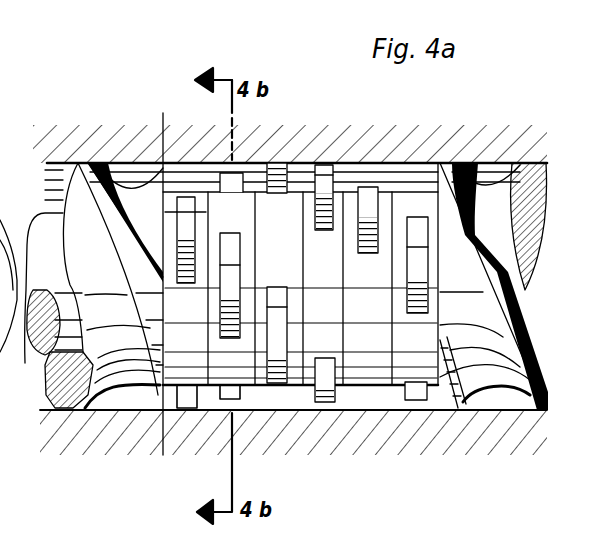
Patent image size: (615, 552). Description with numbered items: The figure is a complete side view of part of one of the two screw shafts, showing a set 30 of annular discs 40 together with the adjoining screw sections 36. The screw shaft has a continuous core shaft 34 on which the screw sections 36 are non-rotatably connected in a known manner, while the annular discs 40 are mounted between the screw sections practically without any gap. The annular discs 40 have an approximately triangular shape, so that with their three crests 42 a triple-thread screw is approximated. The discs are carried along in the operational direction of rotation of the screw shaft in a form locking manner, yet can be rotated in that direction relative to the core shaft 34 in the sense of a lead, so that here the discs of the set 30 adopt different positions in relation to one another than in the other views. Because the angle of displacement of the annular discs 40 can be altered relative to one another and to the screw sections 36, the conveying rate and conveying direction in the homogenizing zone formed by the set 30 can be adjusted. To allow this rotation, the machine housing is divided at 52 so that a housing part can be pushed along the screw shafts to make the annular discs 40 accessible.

The set of annular discs 30 is at (371, 386).
The core shaft 34 is at (25, 363).
The screw sections 36 is at (110, 193).
The annular discs 40 is at (232, 398).
The crests 42 is at (368, 195).
The division of the machine housing 52 is at (167, 127).